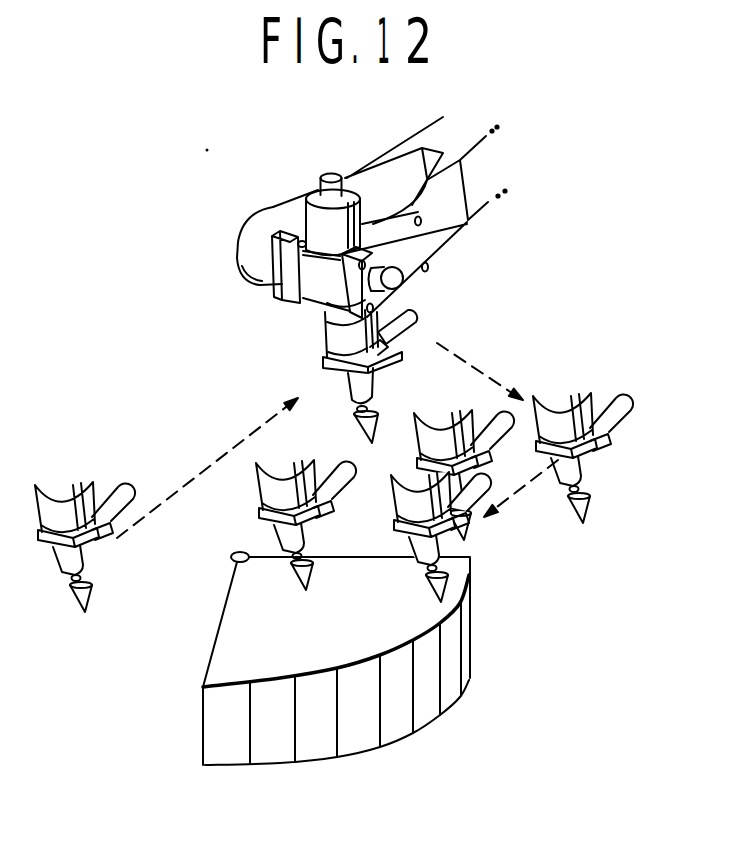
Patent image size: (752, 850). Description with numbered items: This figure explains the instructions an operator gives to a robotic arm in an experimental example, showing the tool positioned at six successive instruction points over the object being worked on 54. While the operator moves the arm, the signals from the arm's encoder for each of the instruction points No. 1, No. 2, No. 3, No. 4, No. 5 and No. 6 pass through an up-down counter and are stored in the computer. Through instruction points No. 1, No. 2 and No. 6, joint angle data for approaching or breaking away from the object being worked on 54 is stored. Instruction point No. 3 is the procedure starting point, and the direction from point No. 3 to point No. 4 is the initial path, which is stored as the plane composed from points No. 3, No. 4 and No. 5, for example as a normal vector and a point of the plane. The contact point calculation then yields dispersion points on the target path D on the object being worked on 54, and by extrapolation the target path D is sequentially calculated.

The instruction point No. 1 is at (372, 280).
The instruction point No. 2 is at (603, 458).
The instruction point No. 3 is at (485, 486).
The instruction point No. 4 is at (423, 545).
The instruction point No. 5 is at (299, 546).
The instruction point No. 6 is at (85, 569).
The object being worked on 54 is at (315, 662).
The target path D is at (387, 655).